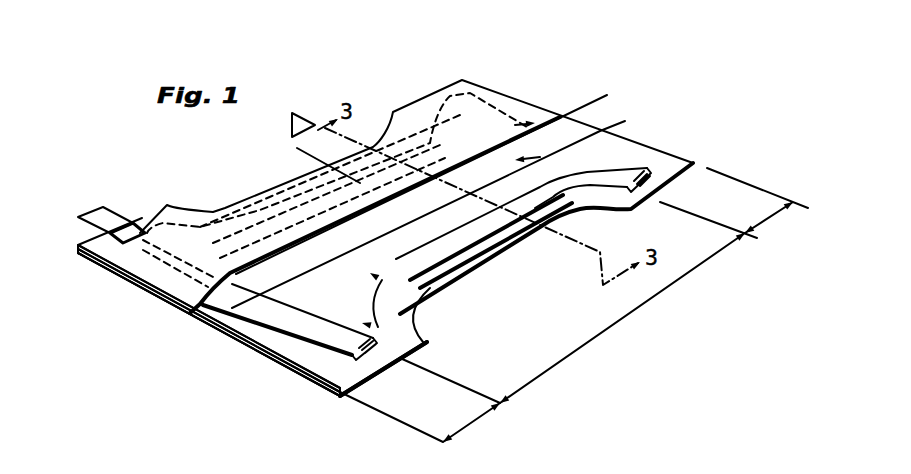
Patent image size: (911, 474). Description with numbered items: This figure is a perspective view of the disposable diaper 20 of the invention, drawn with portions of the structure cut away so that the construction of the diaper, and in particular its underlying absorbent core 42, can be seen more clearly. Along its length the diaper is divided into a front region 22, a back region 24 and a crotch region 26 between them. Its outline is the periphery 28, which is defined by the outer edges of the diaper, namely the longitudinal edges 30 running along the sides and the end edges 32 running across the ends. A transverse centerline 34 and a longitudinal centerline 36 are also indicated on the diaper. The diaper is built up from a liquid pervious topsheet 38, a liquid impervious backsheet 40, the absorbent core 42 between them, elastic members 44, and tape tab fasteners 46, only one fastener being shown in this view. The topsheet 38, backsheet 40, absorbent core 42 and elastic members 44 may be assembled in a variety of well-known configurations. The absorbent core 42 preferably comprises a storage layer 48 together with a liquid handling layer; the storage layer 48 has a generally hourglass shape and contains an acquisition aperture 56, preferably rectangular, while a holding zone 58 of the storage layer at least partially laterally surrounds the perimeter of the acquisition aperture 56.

The diaper 20 is at (481, 60).
The front region 22 is at (757, 200).
The back region 24 is at (420, 400).
The crotch region 26 is at (628, 302).
The periphery 28 is at (240, 352).
The longitudinal edges 30 is at (222, 205).
The end edges 32 is at (105, 270).
The transverse centerline 34 is at (297, 148).
The longitudinal centerline 36 is at (192, 318).
The topsheet 38 is at (160, 268).
The backsheet 40 is at (305, 360).
The absorbent core 42 is at (422, 300).
The elastic members 44 is at (477, 266).
The tape tab fasteners 46 is at (95, 218).
The storage layer 48 is at (427, 341).
The acquisition aperture 56 is at (442, 201).
The holding zone 58 is at (335, 287).